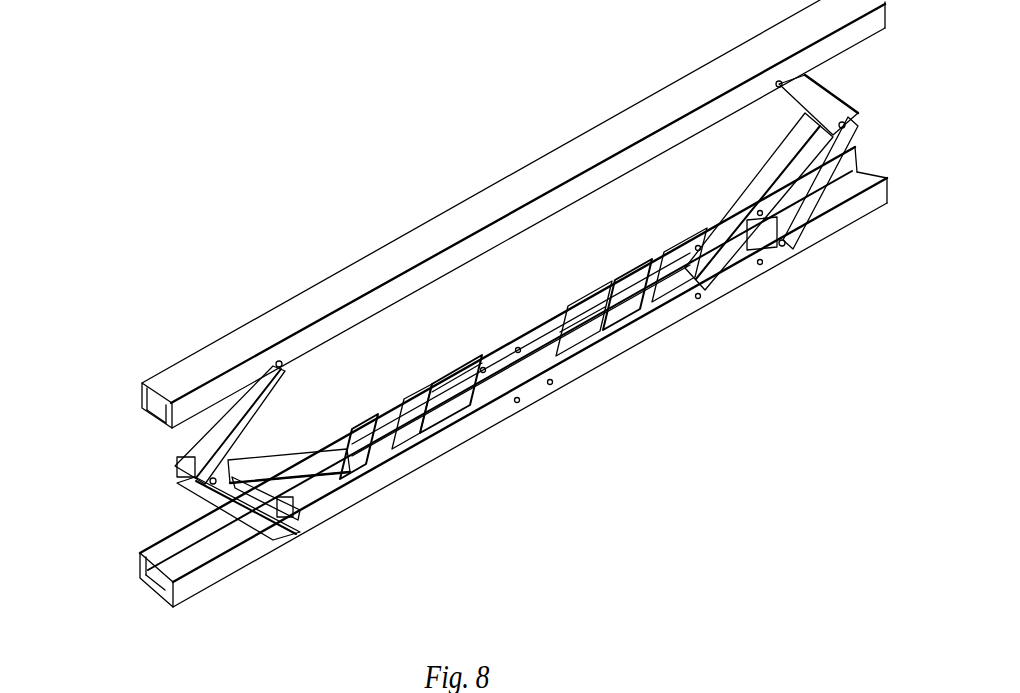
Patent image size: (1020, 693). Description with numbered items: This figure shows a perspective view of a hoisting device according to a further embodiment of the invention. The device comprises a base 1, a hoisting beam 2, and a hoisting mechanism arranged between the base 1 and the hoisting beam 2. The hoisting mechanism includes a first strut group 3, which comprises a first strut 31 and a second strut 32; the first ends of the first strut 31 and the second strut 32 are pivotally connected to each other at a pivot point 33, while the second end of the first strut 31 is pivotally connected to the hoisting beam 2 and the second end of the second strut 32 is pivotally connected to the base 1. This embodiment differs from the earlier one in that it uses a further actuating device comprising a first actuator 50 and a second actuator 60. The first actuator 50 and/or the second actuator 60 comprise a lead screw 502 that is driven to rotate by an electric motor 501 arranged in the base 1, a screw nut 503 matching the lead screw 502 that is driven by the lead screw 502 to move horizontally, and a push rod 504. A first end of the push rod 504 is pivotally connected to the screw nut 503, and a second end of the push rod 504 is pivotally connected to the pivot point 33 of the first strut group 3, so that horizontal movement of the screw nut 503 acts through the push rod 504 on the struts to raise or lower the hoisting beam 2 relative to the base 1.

The base 1 is at (533, 400).
The hoisting beam 2 is at (468, 262).
The first strut group 3 is at (457, 363).
The first strut 31 is at (217, 435).
The second strut 32 is at (253, 510).
The pivot point 33 is at (177, 467).
The first actuator 50 is at (521, 356).
The electric motor 501 is at (460, 430).
The lead screw 502 is at (394, 452).
The screw nut 503 is at (356, 462).
The push rod 504 is at (316, 464).
The second actuator 60 is at (617, 300).